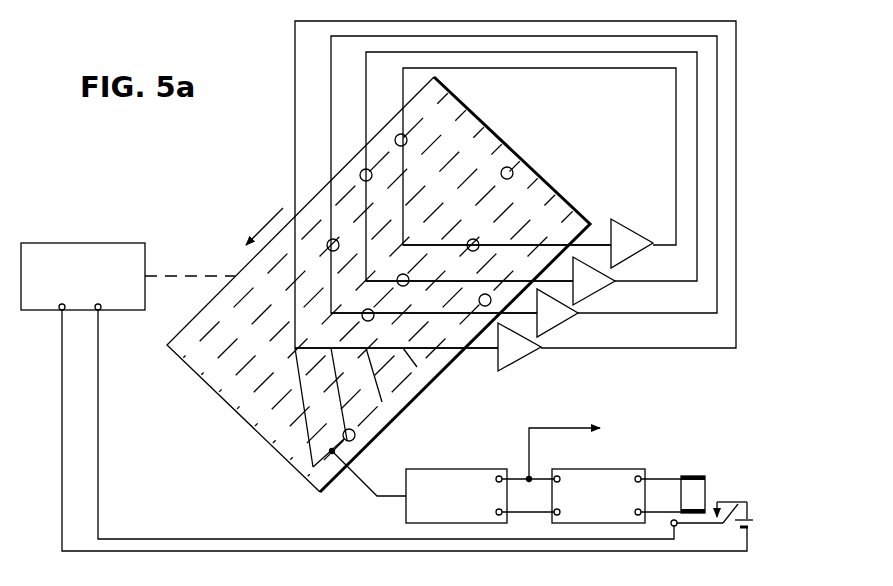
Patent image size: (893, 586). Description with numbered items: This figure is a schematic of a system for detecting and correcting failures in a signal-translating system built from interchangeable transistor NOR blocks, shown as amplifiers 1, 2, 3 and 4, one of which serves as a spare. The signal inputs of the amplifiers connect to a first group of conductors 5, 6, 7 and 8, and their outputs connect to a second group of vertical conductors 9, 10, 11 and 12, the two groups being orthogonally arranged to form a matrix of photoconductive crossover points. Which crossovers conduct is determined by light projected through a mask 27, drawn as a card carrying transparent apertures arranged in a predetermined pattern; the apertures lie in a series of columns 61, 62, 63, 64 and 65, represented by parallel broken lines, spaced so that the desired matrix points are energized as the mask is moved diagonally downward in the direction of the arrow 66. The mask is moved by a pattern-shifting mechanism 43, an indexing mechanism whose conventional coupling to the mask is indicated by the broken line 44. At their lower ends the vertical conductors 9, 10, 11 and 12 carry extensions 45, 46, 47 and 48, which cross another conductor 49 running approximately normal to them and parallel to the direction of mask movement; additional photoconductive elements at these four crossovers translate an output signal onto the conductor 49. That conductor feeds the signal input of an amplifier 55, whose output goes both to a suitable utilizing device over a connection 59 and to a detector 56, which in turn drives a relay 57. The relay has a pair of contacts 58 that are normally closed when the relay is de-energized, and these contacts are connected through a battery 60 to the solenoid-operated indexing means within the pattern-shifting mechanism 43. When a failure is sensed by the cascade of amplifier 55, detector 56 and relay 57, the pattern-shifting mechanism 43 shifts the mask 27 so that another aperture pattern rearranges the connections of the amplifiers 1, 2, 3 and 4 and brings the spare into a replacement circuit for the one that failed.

The amplifier 1 is at (632, 243).
The amplifier 2 is at (594, 281).
The amplifier 3 is at (557, 313).
The amplifier 4 is at (519, 347).
The conductor 5 is at (589, 245).
The conductor 6 is at (567, 281).
The conductor 7 is at (516, 313).
The conductor 8 is at (488, 351).
The vertical conductor 9 is at (294, 137).
The vertical conductor 10 is at (331, 112).
The vertical conductor 11 is at (366, 89).
The vertical conductor 12 is at (403, 73).
The mask 27 is at (168, 344).
The pattern-shifting mechanism 43 is at (108, 244).
The broken line 44 is at (184, 274).
The extension 45 is at (305, 405).
The extension 46 is at (342, 404).
The extension 47 is at (374, 374).
The extension 48 is at (411, 370).
The conductor 49 is at (365, 422).
The amplifier 55 is at (477, 473).
The detector 56 is at (602, 473).
The relay 57 is at (690, 474).
The relay contacts 58 is at (728, 512).
The connection 59 is at (571, 428).
The battery 60 is at (755, 523).
The column of apertures 61 is at (437, 108).
The column of apertures 62 is at (447, 128).
The column of apertures 63 is at (497, 182).
The column of apertures 64 is at (508, 207).
The column of apertures 65 is at (565, 217).
The arrow 66 is at (279, 214).